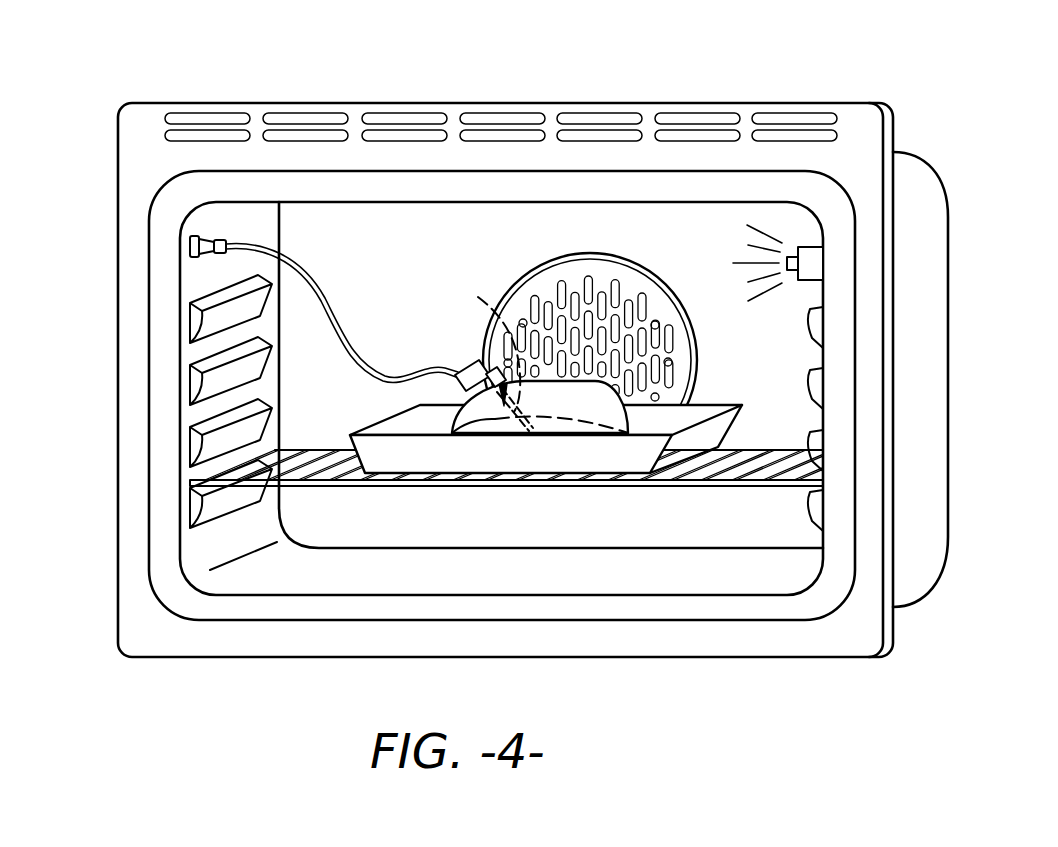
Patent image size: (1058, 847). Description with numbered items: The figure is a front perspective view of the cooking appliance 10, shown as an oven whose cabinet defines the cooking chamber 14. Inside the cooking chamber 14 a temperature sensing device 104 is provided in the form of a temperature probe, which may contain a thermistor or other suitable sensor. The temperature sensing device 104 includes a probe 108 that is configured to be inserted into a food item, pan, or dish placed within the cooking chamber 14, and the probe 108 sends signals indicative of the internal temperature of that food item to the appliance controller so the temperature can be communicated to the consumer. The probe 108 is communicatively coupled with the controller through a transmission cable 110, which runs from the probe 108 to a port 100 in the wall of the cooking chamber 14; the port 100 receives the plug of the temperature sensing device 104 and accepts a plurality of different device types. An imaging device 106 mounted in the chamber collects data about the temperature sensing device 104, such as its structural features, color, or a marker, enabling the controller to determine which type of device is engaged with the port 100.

The cooking appliance 10 is at (590, 80).
The cooking chamber 14 is at (700, 253).
The port 100 is at (197, 233).
The temperature sensing device 104 is at (495, 376).
The imaging device 106 is at (803, 236).
The probe 108 is at (490, 310).
The transmission cable 110 is at (336, 312).